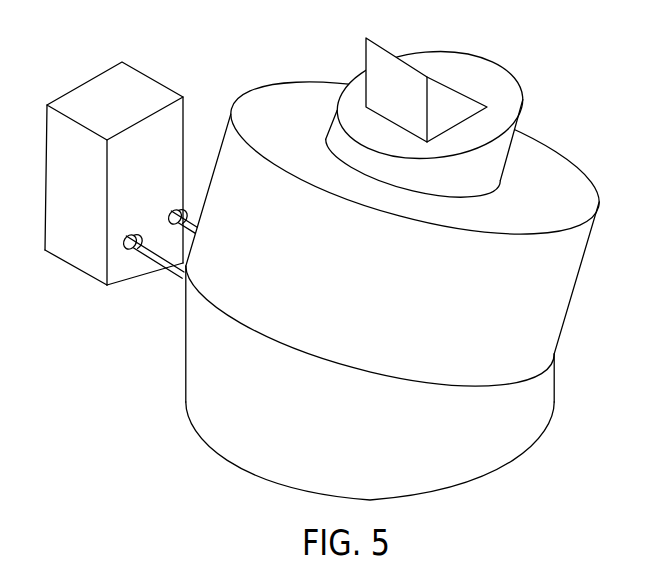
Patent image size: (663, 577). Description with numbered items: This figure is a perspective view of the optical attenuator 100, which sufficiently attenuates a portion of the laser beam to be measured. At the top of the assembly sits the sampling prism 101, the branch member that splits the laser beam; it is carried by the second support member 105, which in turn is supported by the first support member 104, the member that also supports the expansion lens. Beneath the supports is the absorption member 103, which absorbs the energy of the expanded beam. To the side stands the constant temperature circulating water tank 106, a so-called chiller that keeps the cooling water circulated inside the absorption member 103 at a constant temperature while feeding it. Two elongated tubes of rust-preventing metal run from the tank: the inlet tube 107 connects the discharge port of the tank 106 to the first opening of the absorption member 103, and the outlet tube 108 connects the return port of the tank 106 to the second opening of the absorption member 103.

The optical attenuator 100 is at (67, 36).
The sampling prism 101 is at (462, 103).
The absorption member 103 is at (545, 385).
The first support member 104 is at (565, 290).
The second support member 105 is at (497, 152).
The constant temperature circulating water tank 106 is at (70, 250).
The inlet tube 107 is at (140, 257).
The outlet tube 108 is at (182, 244).